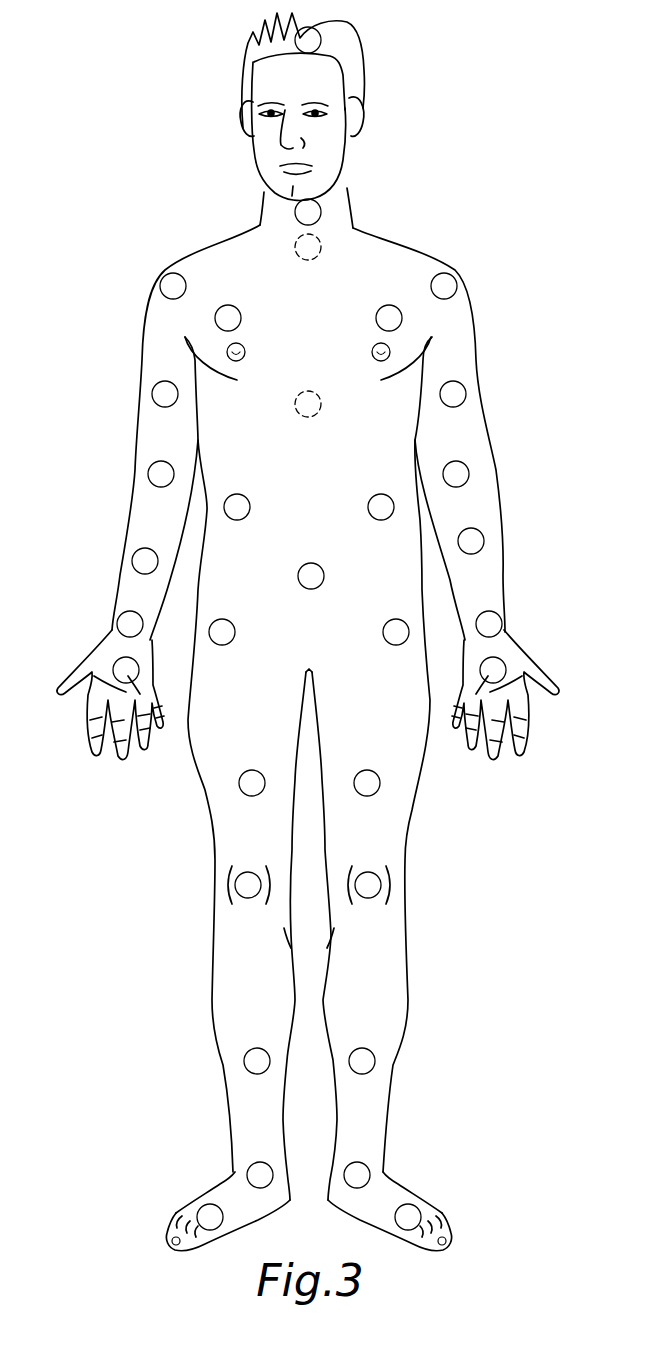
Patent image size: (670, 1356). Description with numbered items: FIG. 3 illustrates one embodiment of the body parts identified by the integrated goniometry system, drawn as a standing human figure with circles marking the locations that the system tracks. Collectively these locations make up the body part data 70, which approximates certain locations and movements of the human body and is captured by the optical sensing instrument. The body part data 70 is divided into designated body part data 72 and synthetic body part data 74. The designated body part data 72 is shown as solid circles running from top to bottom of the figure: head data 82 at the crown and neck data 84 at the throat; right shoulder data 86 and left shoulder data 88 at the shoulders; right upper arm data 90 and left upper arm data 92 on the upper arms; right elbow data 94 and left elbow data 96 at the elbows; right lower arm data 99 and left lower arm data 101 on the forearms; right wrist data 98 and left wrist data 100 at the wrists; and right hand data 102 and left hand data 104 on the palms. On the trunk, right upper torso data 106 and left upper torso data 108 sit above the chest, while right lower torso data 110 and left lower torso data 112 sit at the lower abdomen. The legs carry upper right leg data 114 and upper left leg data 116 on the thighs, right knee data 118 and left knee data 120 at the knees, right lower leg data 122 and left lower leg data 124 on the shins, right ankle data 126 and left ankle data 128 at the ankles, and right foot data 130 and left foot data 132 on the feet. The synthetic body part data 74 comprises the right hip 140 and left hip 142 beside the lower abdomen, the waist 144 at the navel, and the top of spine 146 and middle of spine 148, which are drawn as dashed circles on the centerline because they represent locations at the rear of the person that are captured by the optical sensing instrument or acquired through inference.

The body part data 70 is at (466, 182).
The designated body part data 72 is at (195, 161).
The synthetic body part data 74 is at (209, 125).
The head data 82 is at (316, 36).
The neck data 84 is at (316, 210).
The right shoulder data 86 is at (172, 286).
The left shoulder data 88 is at (446, 286).
The right upper arm data 90 is at (165, 394).
The left upper arm data 92 is at (455, 394).
The right elbow data 94 is at (162, 474).
The left elbow data 96 is at (457, 474).
The right wrist data 98 is at (130, 624).
The right lower arm data 99 is at (145, 561).
The left wrist data 100 is at (490, 624).
The left lower arm data 101 is at (472, 541).
The right hand data 102 is at (126, 670).
The left hand data 104 is at (494, 670).
The right upper torso data 106 is at (226, 314).
The left upper torso data 108 is at (391, 314).
The right lower torso data 110 is at (237, 507).
The left lower torso data 112 is at (383, 507).
The upper right leg data 114 is at (252, 783).
The upper left leg data 116 is at (368, 783).
The right knee data 118 is at (248, 885).
The left knee data 120 is at (368, 885).
The right lower leg data 122 is at (257, 1061).
The left lower leg data 124 is at (362, 1061).
The right ankle data 126 is at (260, 1175).
The left ankle data 128 is at (357, 1175).
The right foot data 130 is at (210, 1217).
The left foot data 132 is at (408, 1217).
The right hip 140 is at (221, 632).
The left hip 142 is at (397, 632).
The waist 144 is at (313, 576).
The top of spine 146 is at (300, 242).
The middle of spine 148 is at (316, 406).